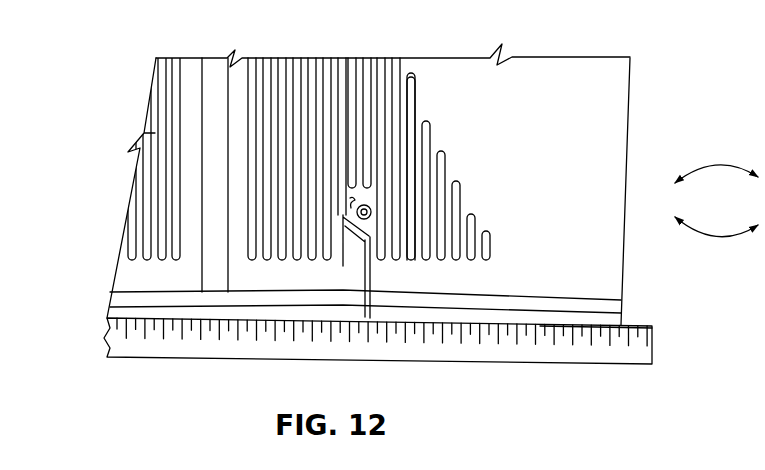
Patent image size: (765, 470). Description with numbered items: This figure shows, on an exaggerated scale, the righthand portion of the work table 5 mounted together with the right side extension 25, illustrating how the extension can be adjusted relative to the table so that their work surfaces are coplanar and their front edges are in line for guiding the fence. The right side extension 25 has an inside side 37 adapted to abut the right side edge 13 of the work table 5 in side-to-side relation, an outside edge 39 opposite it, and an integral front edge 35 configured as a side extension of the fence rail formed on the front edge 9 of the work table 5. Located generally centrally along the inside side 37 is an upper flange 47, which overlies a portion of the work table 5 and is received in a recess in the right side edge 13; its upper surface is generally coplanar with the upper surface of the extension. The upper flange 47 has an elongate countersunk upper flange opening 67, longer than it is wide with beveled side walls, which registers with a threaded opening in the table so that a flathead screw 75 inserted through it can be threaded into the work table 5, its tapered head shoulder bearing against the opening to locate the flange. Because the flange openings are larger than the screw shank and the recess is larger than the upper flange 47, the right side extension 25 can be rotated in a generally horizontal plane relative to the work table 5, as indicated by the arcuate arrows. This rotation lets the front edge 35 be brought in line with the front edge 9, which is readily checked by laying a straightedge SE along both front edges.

The work table 5 is at (154, 159).
The inside side 37 is at (348, 83).
The right side edge 13 is at (342, 60).
The outside edge 39 is at (627, 130).
The right side extension 25 is at (583, 233).
The upper flange opening 67 is at (372, 208).
The flathead screw 75 is at (372, 211).
The upper flange 47 is at (348, 266).
The front edge 9 is at (353, 319).
The front edge 35 is at (415, 326).
The straightedge SE is at (560, 353).